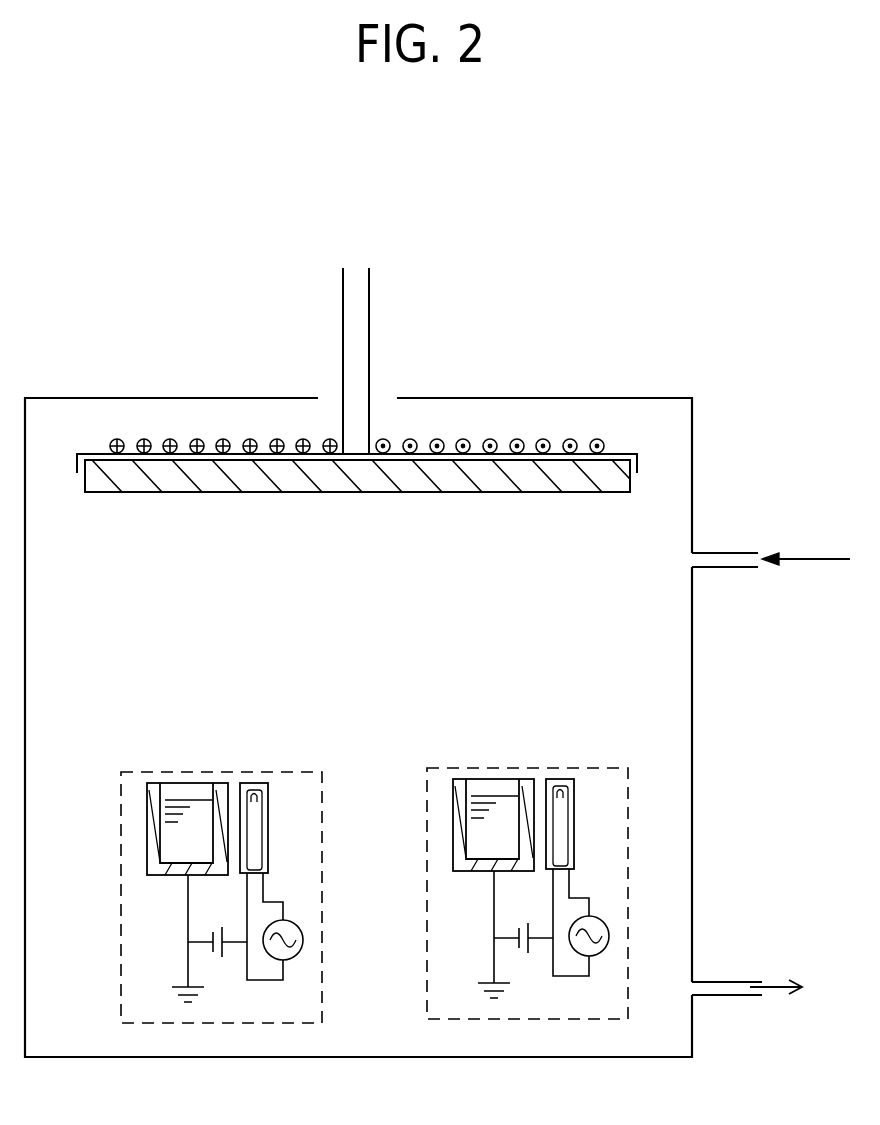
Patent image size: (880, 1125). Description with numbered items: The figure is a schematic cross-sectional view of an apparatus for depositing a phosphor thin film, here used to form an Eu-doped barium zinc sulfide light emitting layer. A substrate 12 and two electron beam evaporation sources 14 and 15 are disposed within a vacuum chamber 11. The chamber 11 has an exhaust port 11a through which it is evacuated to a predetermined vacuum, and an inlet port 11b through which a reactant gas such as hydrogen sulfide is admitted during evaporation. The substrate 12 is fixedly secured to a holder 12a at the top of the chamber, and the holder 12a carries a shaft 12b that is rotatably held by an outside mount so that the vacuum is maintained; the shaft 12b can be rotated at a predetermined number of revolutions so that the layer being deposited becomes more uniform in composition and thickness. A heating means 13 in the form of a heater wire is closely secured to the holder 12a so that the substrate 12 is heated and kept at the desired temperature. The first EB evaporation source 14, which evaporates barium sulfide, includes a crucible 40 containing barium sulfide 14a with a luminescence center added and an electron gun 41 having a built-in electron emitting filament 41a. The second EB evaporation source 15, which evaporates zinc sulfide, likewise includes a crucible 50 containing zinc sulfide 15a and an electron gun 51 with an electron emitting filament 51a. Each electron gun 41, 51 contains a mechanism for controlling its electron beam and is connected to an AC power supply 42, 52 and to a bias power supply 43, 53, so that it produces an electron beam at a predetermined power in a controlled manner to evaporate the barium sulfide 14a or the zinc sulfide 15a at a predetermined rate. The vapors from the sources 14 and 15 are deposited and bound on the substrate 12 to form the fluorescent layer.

The vacuum chamber 11 is at (588, 398).
The exhaust port 11a is at (722, 997).
The inlet port 11b is at (712, 553).
The substrate 12 is at (387, 485).
The holder 12a is at (640, 455).
The shaft 12b is at (369, 328).
The heating means 13 is at (468, 440).
The EB evaporation source 14 is at (514, 875).
The barium sulfide 14a is at (440, 798).
The crucible 40 is at (442, 833).
The electron gun 41 is at (605, 811).
The electron emitting filament 41a is at (615, 826).
The AC power supply 42 is at (609, 922).
The bias power supply 43 is at (526, 965).
The EB evaporation source 15 is at (197, 770).
The zinc sulfide 15a is at (163, 815).
The crucible 50 is at (157, 870).
The electron gun 51 is at (268, 783).
The electron emitting filament 51a is at (262, 800).
The AC power supply 52 is at (302, 940).
The bias power supply 53 is at (228, 953).